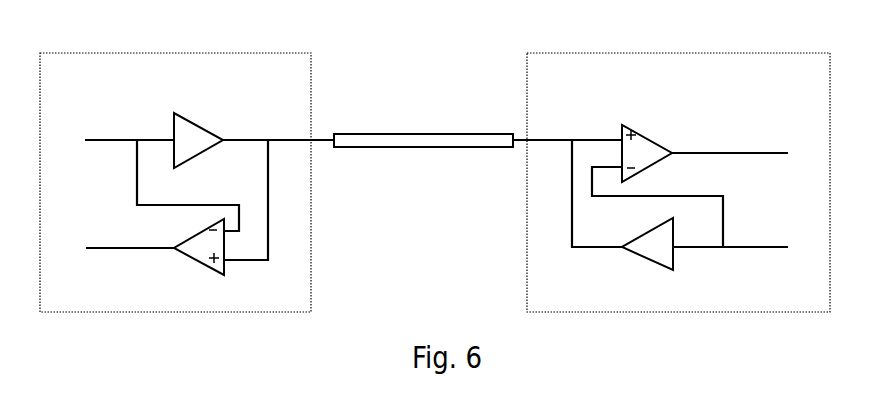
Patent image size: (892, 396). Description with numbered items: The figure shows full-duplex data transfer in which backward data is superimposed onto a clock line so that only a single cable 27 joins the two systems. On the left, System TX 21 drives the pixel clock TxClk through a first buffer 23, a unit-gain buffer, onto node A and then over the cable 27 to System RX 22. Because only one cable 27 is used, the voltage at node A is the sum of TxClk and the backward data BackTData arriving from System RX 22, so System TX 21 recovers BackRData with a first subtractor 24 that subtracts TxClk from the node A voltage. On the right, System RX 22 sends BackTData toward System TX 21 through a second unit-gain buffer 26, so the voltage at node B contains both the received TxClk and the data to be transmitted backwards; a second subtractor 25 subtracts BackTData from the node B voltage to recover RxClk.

The System TX 21 is at (311, 73).
The System RX 22 is at (527, 68).
The first buffer 23 is at (187, 162).
The first subtractor 24 is at (201, 264).
The second subtractor 25 is at (647, 138).
The second unit-gain buffer 26 is at (665, 262).
The cable 27 is at (420, 147).